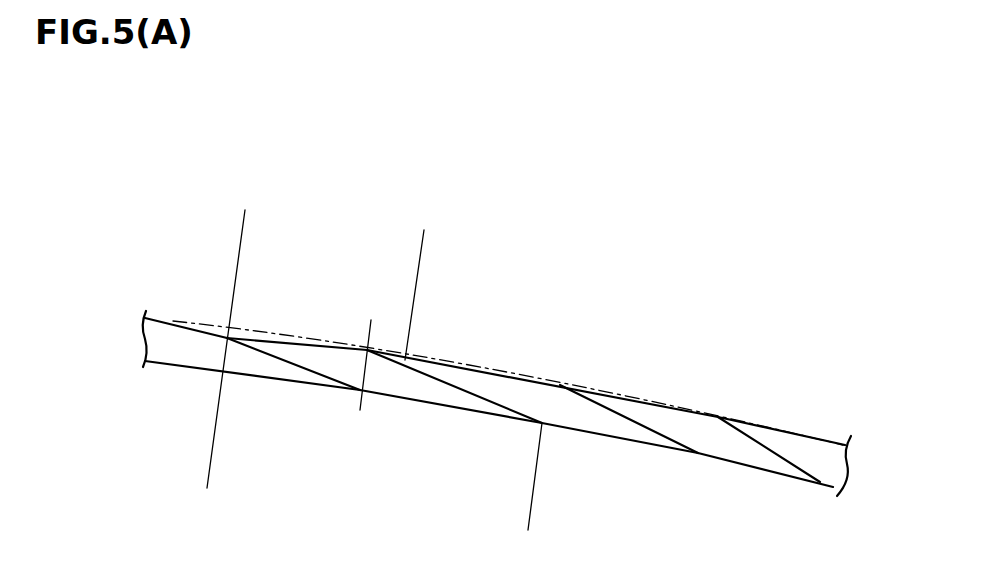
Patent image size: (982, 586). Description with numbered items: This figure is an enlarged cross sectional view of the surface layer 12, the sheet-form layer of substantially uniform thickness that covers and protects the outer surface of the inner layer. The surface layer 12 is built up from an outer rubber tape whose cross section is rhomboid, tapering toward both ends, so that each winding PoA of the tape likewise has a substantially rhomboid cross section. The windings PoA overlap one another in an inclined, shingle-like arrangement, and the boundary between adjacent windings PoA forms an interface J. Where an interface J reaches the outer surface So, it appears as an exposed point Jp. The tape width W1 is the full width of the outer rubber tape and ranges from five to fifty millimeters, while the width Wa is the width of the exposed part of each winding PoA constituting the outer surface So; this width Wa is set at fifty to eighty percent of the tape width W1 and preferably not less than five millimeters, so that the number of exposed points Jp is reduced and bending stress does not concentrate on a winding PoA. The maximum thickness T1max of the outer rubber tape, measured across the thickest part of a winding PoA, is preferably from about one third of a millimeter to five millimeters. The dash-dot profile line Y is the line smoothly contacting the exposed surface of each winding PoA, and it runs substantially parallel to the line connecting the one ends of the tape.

The surface layer 12 is at (777, 408).
The profile line Y is at (745, 422).
The exposed point Jp is at (227, 333).
The winding PoA is at (302, 348).
The interface J is at (477, 390).
The outer surface So is at (630, 402).
The width of exposed part Wa is at (422, 237).
The tape width W1 is at (528, 524).
The maximum thickness T1max is at (373, 337).